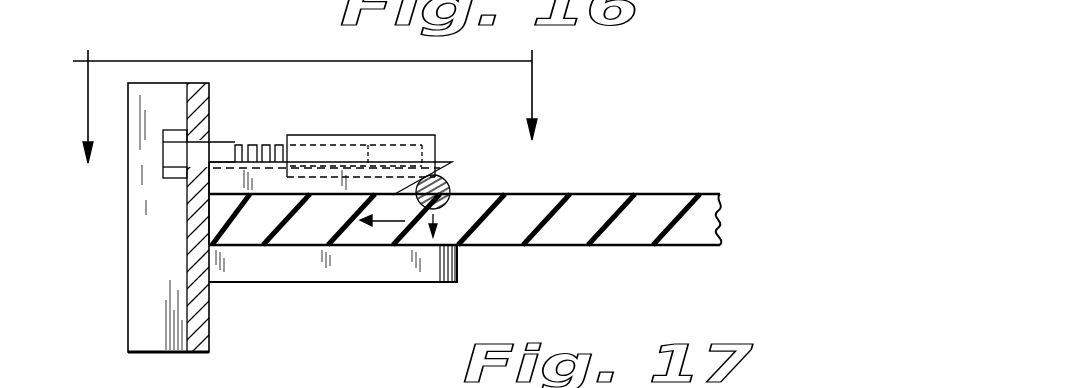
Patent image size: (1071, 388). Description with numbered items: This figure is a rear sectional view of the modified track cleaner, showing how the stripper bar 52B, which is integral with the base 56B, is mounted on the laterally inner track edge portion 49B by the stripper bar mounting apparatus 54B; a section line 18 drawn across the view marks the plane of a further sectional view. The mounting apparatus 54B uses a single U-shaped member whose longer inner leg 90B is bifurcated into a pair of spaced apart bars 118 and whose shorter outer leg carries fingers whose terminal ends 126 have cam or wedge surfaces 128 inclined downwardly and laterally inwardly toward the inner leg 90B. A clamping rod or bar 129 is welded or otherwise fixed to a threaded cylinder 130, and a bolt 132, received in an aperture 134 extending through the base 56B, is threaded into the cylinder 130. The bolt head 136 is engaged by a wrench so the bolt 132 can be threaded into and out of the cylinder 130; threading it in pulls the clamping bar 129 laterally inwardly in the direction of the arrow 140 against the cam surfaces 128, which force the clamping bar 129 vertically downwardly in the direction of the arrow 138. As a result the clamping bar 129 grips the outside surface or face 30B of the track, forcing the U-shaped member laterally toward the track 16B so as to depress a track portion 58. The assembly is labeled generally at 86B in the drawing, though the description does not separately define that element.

The section line 18— 18 is at (311, 95).
The base 56B is at (187, 222).
The laterally inner track edge portion 49B is at (252, 226).
The stripper bar 52B is at (157, 352).
The aperture 134 is at (196, 124).
The bolt head 136 is at (174, 134).
The bolt 132 is at (238, 142).
The threaded cylinder 130 is at (399, 135).
The adjustment assembly 86B is at (380, 124).
The terminal ends 126 is at (438, 160).
The cam or wedge surfaces 128 is at (452, 164).
The clamping rod or bar 129 is at (458, 199).
The track portion 58 is at (463, 208).
The outside surface or face of the track 30B is at (583, 194).
The track 16B is at (657, 210).
The stripper bar mounting apparatus 54B is at (553, 105).
The arrow (laterally inward direction) 140 is at (388, 225).
The arrow (vertically downward direction) 138 is at (430, 215).
The spaced apart bars 118 is at (423, 262).
The longer inner leg 90B is at (326, 285).